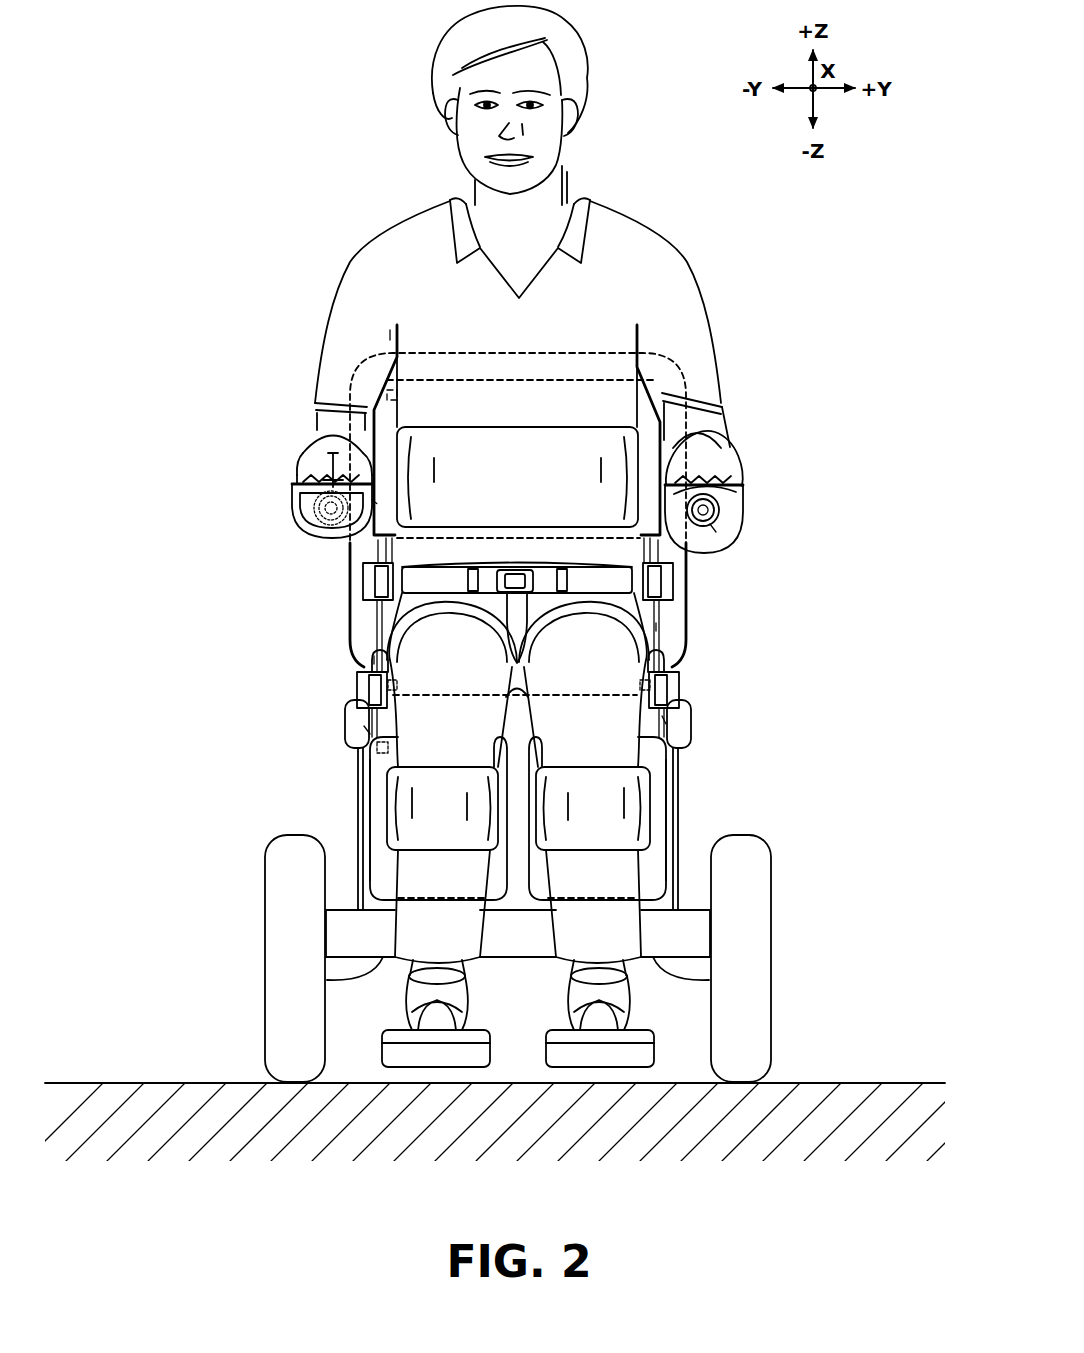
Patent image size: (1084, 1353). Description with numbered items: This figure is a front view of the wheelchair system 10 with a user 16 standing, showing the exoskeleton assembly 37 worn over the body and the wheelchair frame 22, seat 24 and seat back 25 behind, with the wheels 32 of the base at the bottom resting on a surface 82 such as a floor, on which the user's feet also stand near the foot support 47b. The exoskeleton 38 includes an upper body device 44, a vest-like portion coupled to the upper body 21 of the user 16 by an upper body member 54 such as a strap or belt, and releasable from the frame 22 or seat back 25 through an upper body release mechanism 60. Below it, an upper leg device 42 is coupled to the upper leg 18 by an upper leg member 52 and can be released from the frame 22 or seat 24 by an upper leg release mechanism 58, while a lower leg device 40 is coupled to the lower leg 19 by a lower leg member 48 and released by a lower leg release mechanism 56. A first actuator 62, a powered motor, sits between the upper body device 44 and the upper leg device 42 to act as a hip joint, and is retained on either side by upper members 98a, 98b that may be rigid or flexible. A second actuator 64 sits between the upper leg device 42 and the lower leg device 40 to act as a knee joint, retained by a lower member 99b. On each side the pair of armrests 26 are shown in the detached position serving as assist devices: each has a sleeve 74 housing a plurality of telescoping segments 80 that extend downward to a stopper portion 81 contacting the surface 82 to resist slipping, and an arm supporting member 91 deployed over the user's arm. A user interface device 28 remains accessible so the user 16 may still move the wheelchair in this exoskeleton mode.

The wheelchair system 10 is at (122, 92).
The user 16 is at (326, 216).
The upper leg 18 is at (602, 657).
The lower leg 19 is at (622, 873).
The upper body 21 is at (520, 398).
The frame 22 is at (687, 773).
The seat 24 is at (353, 722).
The seat back 25 is at (378, 645).
The pair of armrests 26 is at (322, 530).
The user interface device 28 is at (320, 467).
The wheels 32 is at (295, 1058).
The exoskeleton assembly 37 is at (897, 345).
The exoskeleton 38 is at (800, 678).
The lower leg device 40 is at (335, 770).
The upper leg device 42 is at (365, 660).
The upper body device 44 is at (366, 545).
The foot support 47b is at (437, 1055).
The lower leg member 48 is at (408, 810).
The upper leg member 52 is at (382, 642).
The upper body member 54 is at (573, 440).
The lower leg release mechanism 56 is at (393, 748).
The upper leg release mechanism 58 is at (397, 683).
The upper body release mechanism 60 is at (372, 395).
The first actuator 62 is at (370, 582).
The second actuator 64 is at (360, 692).
The sleeve 74 is at (300, 512).
The plurality of telescoping segments 80 is at (298, 486).
The stopper portion 81 is at (380, 503).
The surface 82 is at (163, 1083).
The arm supporting member 91 is at (335, 443).
The upper member 98a is at (378, 568).
The upper member 98b is at (374, 660).
The lower member 99b is at (368, 728).